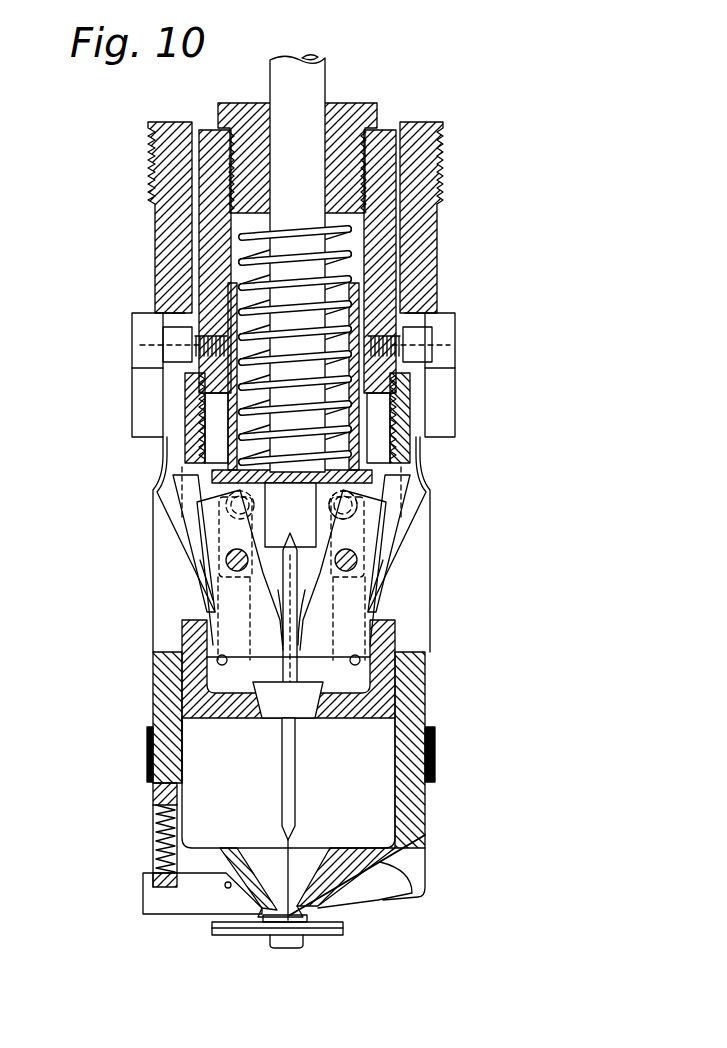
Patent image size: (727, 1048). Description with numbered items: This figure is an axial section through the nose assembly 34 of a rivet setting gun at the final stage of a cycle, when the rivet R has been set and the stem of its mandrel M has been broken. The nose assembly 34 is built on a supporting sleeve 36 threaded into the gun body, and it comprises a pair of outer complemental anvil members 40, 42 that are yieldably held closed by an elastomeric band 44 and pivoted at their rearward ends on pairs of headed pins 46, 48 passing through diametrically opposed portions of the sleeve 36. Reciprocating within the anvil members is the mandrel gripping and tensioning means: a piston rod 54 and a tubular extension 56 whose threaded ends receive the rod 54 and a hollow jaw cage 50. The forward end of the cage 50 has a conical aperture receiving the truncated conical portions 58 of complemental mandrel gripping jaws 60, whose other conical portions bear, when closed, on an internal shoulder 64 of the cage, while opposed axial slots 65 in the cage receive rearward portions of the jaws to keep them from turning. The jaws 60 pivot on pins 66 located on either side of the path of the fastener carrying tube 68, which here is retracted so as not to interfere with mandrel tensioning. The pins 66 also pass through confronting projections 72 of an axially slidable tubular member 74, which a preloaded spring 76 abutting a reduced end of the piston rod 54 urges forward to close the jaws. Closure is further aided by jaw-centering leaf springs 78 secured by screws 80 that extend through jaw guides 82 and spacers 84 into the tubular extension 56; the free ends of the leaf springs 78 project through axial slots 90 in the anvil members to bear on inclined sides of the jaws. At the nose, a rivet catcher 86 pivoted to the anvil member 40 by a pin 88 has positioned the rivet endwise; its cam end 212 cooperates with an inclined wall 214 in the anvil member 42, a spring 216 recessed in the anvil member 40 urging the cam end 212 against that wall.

The nose assembly 34 is at (510, 410).
The supporting sleeve 36 is at (433, 227).
The anvil member 40 is at (153, 712).
The anvil member 42 is at (430, 700).
The elastomeric band 44 is at (437, 752).
The headed pins 46 is at (197, 515).
The headed pins 48 is at (405, 538).
The jaw cage 50 is at (225, 720).
The piston rod 54 is at (340, 103).
The tubular extension 56 is at (395, 122).
The truncated conical portions 58 is at (272, 720).
The mandrel gripping jaws 60 is at (197, 540).
The internal shoulder 64 is at (287, 675).
The axial slots 65 is at (393, 617).
The pins 66 is at (230, 560).
The fastener carrying tube 68 is at (323, 62).
The projections 72 is at (308, 588).
The tubular member 74 is at (405, 425).
The spring 76 is at (367, 252).
The jaw-centering leaf springs 78 is at (150, 487).
The screws 80 is at (140, 357).
The jaw guides 82 is at (173, 473).
The spacers 84 is at (183, 372).
The rivet catcher 86 is at (357, 903).
The pin 88 is at (226, 887).
The axial slots 90 is at (185, 660).
The cam end 212 is at (415, 880).
The inclined wall 214 is at (422, 847).
The spring 216 is at (152, 850).
The mandrel M is at (297, 802).
The rivet R is at (302, 942).